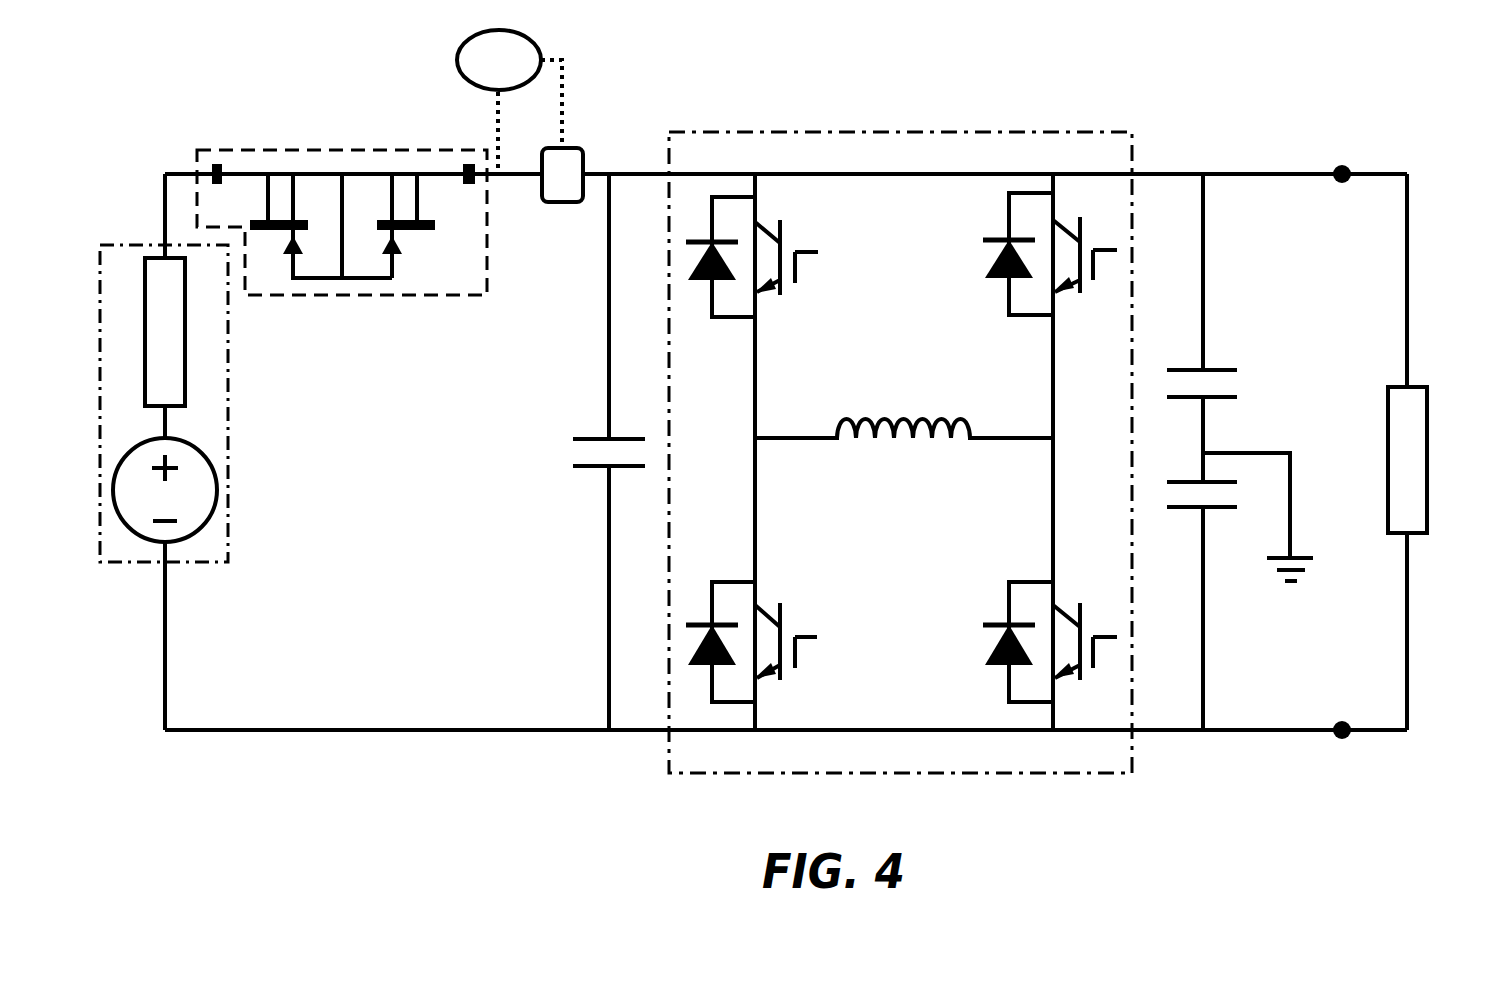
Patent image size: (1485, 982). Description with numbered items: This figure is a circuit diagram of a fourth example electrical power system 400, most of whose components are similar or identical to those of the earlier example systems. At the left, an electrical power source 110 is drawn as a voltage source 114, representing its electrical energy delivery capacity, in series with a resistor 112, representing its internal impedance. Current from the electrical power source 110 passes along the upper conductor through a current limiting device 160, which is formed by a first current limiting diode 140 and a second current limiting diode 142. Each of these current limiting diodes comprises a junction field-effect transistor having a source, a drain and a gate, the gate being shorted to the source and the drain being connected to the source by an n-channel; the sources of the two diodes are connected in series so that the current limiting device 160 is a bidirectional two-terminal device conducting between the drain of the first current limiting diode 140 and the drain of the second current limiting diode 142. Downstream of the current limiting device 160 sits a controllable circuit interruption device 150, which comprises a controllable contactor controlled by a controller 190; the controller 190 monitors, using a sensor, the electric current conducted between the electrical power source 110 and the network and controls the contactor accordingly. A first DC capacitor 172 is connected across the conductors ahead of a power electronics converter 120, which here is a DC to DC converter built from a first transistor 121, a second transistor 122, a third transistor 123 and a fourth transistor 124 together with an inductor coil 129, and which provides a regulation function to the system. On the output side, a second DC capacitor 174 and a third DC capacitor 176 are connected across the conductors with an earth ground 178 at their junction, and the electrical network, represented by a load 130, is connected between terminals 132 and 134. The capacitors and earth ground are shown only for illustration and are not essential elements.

The electrical power system 400 is at (163, 40).
The electrical power source 110 is at (185, 565).
The resistor 112 is at (186, 383).
The voltage source 114 is at (217, 478).
The power electronics converter 120 is at (932, 130).
The first transistor 121 is at (800, 253).
The second transistor 122 is at (808, 637).
The third transistor 123 is at (998, 280).
The fourth transistor 124 is at (993, 628).
The inductor coil 129 is at (878, 418).
The load 130 is at (1427, 490).
The terminal 132 is at (1342, 183).
The terminal 134 is at (1340, 738).
The first current limiting diode 140 is at (300, 280).
The second current limiting diode 142 is at (385, 280).
The controllable circuit interruption device 150 is at (560, 203).
The current limiting device 160 is at (328, 150).
The first DC capacitor 172 is at (587, 437).
The second DC capacitor 174 is at (1218, 370).
The third DC capacitor 176 is at (1222, 508).
The earth ground 178 is at (1297, 560).
The controller 190 is at (458, 44).